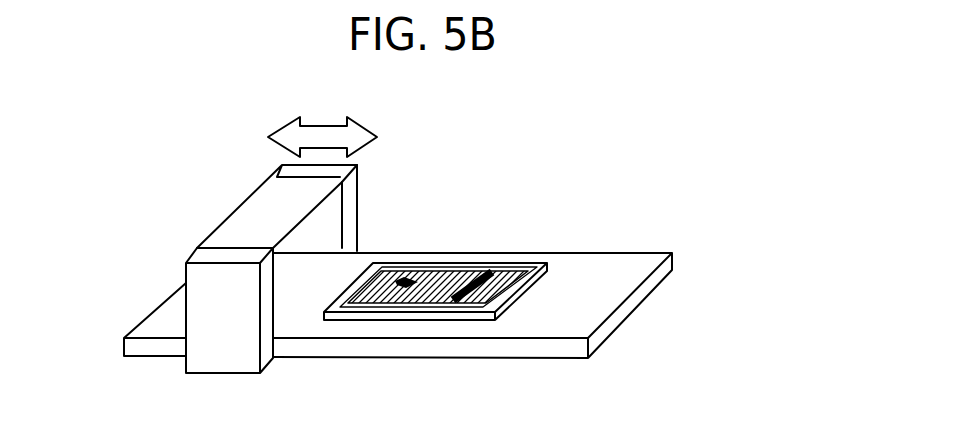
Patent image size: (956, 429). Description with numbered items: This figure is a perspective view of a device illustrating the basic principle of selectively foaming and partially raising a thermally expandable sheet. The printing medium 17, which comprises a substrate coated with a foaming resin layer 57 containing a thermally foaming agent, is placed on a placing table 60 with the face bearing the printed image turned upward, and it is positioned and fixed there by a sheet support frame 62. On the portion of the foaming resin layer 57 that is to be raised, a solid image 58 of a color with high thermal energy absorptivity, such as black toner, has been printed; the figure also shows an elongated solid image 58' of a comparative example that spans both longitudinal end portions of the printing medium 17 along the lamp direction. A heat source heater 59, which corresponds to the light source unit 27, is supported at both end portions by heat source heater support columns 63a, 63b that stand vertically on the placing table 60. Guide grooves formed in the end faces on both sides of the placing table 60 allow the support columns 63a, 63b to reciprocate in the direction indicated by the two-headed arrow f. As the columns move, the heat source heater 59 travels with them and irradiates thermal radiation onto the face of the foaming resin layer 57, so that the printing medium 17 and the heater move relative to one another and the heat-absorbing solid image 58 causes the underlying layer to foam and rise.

The heat source heater 59 is at (236, 194).
The light source unit 27 is at (261, 198).
The heat source heater support column 63b is at (348, 206).
The heat source heater support column 63a is at (212, 355).
The placing table 60 is at (617, 268).
The sheet support frame 62 is at (430, 332).
The foaming resin layer 57 is at (452, 278).
The printing medium 17 is at (438, 246).
The solid image 58 is at (402, 247).
The solid image 58' is at (508, 255).
The two-headed arrow f is at (312, 123).